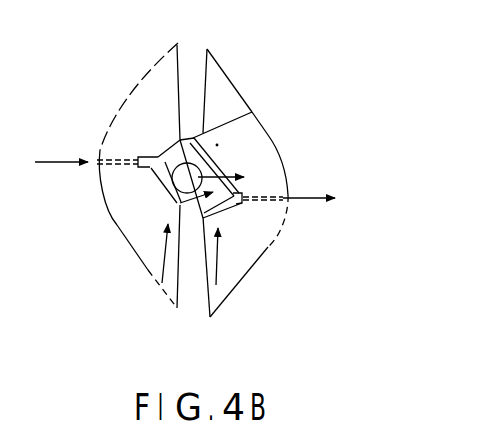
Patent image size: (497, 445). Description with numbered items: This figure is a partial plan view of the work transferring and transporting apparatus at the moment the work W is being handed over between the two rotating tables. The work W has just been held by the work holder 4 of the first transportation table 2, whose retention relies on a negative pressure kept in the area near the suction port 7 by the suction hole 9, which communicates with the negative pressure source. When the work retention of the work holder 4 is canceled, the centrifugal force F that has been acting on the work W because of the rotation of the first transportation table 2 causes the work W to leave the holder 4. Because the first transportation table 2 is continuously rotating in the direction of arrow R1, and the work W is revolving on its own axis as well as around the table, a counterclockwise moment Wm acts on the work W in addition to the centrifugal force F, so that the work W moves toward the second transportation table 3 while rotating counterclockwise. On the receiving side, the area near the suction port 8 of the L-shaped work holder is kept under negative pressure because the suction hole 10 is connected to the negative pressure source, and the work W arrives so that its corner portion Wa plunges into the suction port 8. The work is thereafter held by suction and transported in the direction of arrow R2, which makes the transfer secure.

The first transportation table 2 is at (148, 271).
The second transportation table 3 is at (240, 93).
The work holder 4 is at (167, 177).
The suction port 7 is at (152, 156).
The suction port 8 is at (230, 209).
The suction hole 9 is at (117, 156).
The suction hole 10 is at (265, 196).
The work W is at (244, 105).
The centrifugal force F is at (243, 156).
The rotation direction of first transportation table R1 is at (167, 249).
The transport direction of second transportation table R2 is at (238, 206).
The counterclockwise moment Wm is at (175, 186).
The corner portion of the work Wa is at (221, 259).